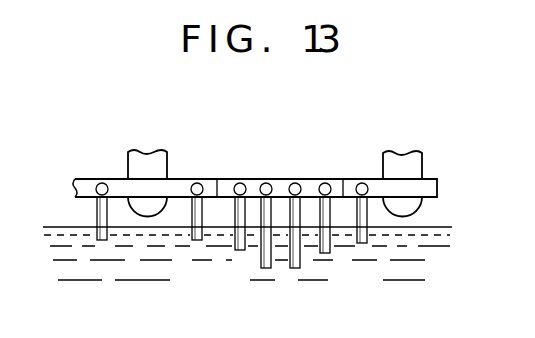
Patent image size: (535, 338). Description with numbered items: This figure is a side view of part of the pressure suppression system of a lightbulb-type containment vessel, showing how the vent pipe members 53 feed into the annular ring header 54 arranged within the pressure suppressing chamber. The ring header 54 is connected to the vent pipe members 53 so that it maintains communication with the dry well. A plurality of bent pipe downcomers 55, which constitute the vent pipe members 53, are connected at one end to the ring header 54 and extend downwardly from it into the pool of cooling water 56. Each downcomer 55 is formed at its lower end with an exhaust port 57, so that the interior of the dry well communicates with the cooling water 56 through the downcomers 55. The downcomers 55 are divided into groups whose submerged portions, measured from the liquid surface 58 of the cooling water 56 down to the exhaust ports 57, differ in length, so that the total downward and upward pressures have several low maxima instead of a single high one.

The vent pipe member 53 is at (167, 166).
The ring header 54 is at (280, 180).
The vent pipe downcomer 55 is at (236, 249).
The cooling water 56 is at (147, 312).
The exhaust port 57 is at (295, 270).
The liquid surface 58 is at (431, 227).